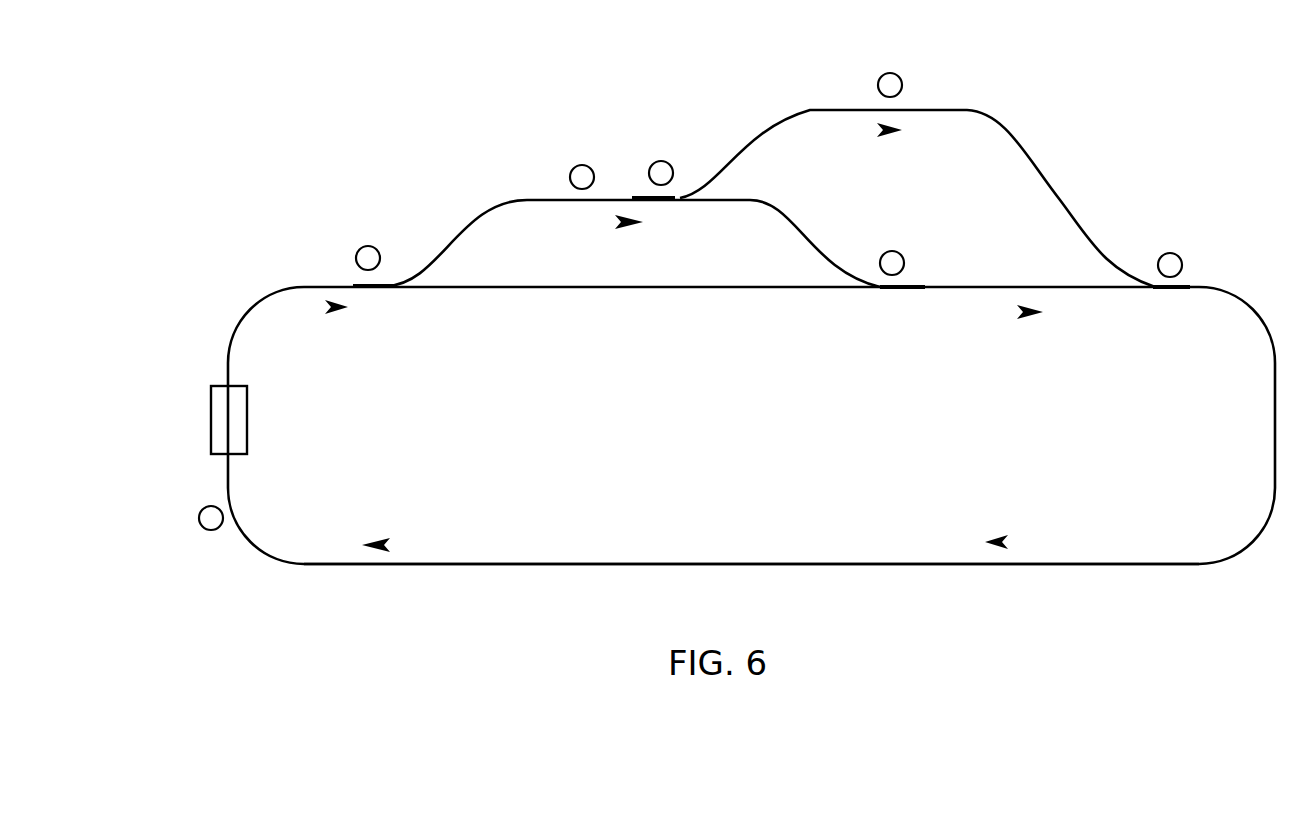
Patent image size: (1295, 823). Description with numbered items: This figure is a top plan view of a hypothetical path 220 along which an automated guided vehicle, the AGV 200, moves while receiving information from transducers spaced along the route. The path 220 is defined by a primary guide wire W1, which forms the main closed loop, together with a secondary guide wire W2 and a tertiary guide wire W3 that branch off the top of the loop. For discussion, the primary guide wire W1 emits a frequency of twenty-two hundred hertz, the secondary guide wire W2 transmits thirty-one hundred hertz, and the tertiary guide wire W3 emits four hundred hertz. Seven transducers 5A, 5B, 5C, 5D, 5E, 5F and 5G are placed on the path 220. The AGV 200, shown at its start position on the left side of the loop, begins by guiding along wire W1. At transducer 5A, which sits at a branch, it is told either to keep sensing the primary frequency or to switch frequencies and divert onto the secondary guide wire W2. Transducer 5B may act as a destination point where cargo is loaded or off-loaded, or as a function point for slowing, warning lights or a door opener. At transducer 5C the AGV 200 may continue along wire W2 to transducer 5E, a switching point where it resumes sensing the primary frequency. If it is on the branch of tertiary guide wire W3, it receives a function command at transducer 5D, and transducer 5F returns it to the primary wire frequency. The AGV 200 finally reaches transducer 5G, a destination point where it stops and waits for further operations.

The primary guide wire W1 is at (272, 555).
The secondary guide wire W2 is at (447, 255).
The tertiary guide wire W3 is at (748, 135).
The AGV 200 is at (247, 412).
The hypothetical path 220 is at (450, 567).
The transducer 5A is at (368, 246).
The transducer 5B is at (582, 165).
The transducer 5C is at (661, 161).
The transducer 5D is at (906, 44).
The transducer 5E is at (885, 252).
The transducer 5F is at (1170, 253).
The transducer 5G is at (206, 528).